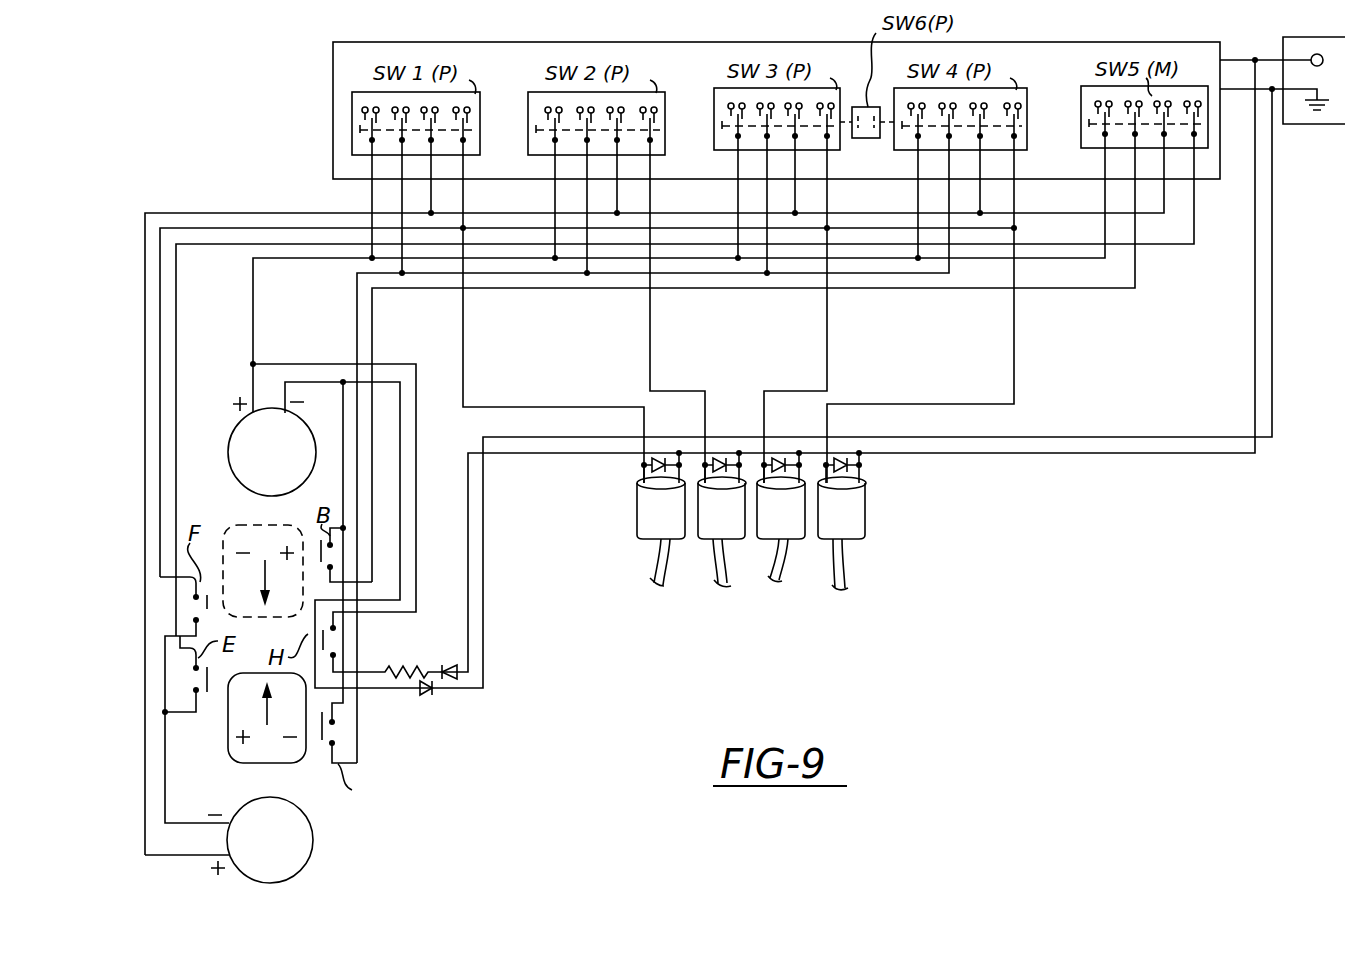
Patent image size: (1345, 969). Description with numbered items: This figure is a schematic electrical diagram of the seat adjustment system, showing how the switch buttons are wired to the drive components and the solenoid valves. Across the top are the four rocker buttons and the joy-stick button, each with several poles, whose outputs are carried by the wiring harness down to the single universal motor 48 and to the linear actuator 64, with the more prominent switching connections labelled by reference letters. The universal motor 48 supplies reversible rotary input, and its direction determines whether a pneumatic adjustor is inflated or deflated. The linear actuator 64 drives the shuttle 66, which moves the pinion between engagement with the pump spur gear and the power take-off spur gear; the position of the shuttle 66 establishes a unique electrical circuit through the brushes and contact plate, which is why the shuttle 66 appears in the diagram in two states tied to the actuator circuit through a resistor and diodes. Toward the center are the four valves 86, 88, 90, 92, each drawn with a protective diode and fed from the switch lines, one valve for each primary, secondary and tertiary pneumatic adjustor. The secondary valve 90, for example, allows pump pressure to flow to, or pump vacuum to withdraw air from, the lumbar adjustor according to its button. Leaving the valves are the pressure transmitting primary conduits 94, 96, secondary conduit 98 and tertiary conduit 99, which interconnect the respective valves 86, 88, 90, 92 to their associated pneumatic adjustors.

The universal motor 48 is at (229, 441).
The linear actuator 64 is at (308, 866).
The shuttle 66 is at (225, 524).
The valve 86 is at (793, 527).
The valve 88 is at (858, 512).
The secondary valve 90 is at (706, 530).
The valve 92 is at (643, 512).
The primary conduit 94 is at (780, 572).
The primary conduit 96 is at (845, 567).
The secondary conduit 98 is at (714, 575).
The tertiary conduit 99 is at (655, 565).